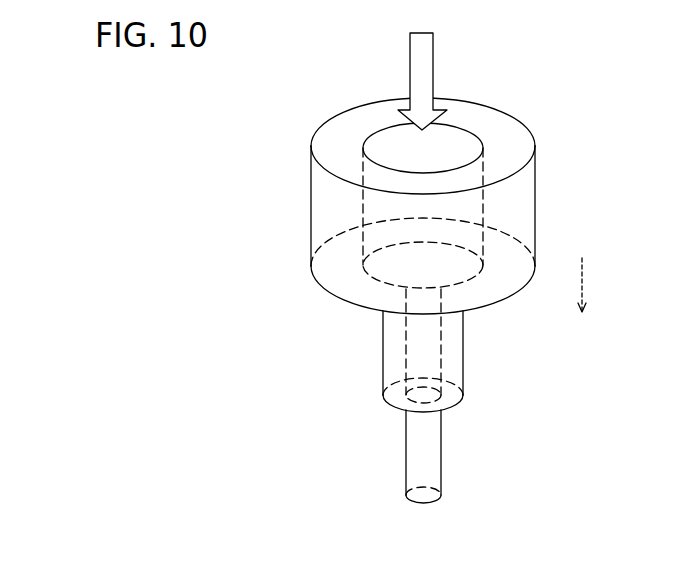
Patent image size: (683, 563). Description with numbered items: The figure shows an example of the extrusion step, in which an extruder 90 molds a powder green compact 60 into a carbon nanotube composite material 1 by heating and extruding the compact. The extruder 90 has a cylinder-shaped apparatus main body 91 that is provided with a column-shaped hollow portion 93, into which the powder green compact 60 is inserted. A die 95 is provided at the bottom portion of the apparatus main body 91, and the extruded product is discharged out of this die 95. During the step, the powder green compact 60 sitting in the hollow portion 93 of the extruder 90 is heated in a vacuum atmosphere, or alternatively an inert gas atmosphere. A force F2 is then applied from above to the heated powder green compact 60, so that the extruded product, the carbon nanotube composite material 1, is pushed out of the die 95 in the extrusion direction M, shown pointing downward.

The carbon nanotube composite material 1 is at (442, 447).
The powder green compact 60 is at (438, 163).
The extruder 90 is at (446, 252).
The apparatus main body 91 is at (311, 217).
The hollow portion 93 is at (375, 138).
The die 95 is at (390, 408).
The force F2 is at (434, 50).
The extrusion direction M is at (592, 285).